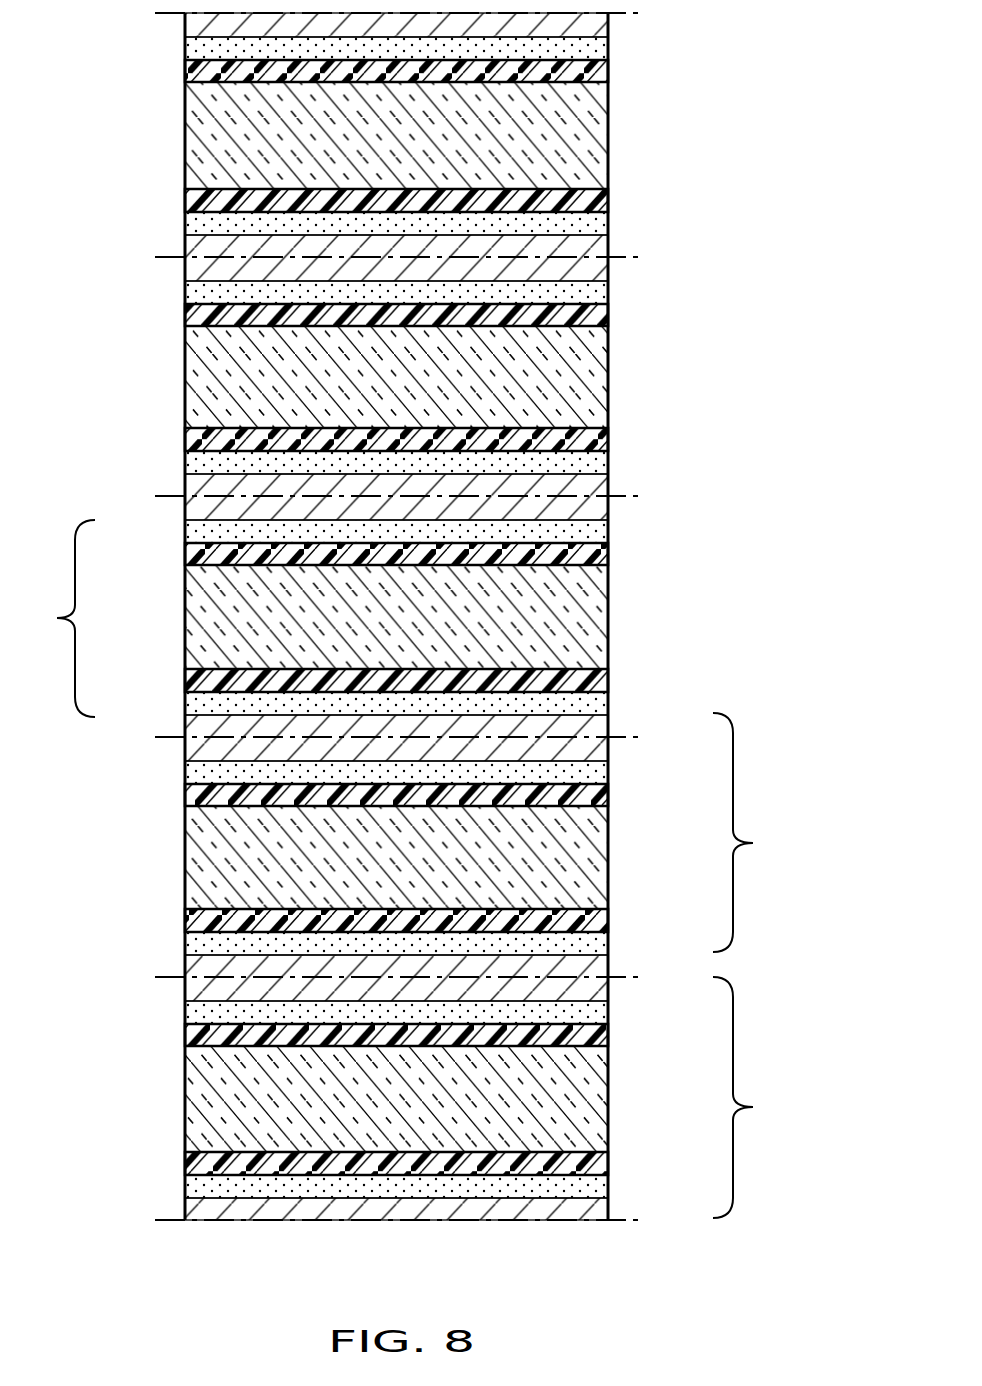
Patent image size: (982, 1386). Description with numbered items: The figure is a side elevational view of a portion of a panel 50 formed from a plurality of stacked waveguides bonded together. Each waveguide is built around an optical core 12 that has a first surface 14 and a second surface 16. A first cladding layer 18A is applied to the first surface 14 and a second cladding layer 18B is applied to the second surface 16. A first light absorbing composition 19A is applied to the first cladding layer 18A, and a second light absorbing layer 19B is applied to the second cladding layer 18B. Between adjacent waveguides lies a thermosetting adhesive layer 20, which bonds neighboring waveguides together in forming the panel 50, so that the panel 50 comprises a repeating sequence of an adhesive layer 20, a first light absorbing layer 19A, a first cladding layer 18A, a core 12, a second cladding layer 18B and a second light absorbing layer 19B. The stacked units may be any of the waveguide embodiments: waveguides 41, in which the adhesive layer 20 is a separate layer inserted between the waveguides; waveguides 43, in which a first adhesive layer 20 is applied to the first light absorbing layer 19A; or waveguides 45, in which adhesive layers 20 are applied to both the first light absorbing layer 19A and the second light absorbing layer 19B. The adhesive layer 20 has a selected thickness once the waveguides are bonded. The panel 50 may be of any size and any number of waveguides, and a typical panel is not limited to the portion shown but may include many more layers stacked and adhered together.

The optical core 12 is at (601, 135).
The first surface 14 is at (212, 82).
The second surface 16 is at (212, 189).
The first cladding layer 18A is at (601, 72).
The second cladding layer 18B is at (601, 200).
The first light absorbing composition 19A is at (601, 49).
The second light absorbing layer 19B is at (601, 224).
The adhesive layer 20 is at (186, 26).
The waveguides 41 is at (57, 618).
The waveguides 43 is at (755, 832).
The waveguides 45 is at (755, 1097).
The panel 50 is at (733, 88).